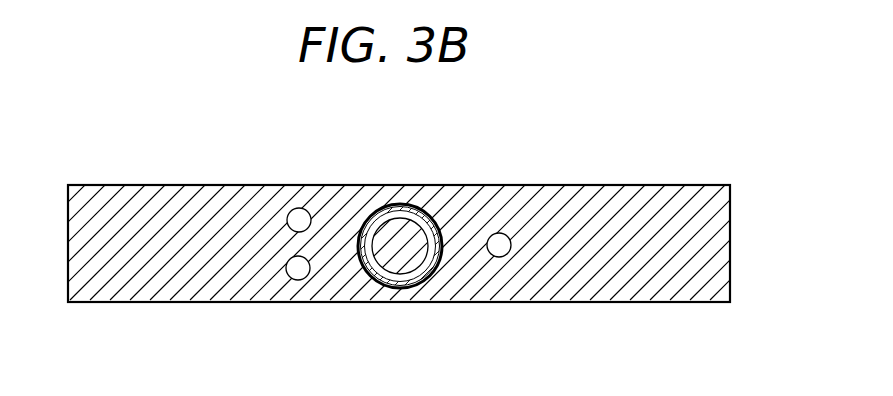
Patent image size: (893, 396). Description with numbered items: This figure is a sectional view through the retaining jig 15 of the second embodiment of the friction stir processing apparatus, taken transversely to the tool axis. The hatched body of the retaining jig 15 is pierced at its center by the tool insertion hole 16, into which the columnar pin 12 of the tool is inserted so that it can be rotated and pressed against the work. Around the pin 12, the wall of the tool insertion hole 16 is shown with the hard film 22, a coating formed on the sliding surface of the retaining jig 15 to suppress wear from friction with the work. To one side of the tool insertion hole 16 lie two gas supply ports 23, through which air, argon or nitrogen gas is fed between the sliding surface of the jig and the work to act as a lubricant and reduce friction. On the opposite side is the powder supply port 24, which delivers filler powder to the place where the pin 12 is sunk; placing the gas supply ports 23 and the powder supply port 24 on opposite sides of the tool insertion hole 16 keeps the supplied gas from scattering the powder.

The pin 12 is at (400, 248).
The retaining jig 15 is at (153, 225).
The tool insertion hole 16 is at (403, 203).
The hard film 22 is at (431, 272).
The gas supply ports 23 is at (298, 268).
The powder supply port 24 is at (499, 242).